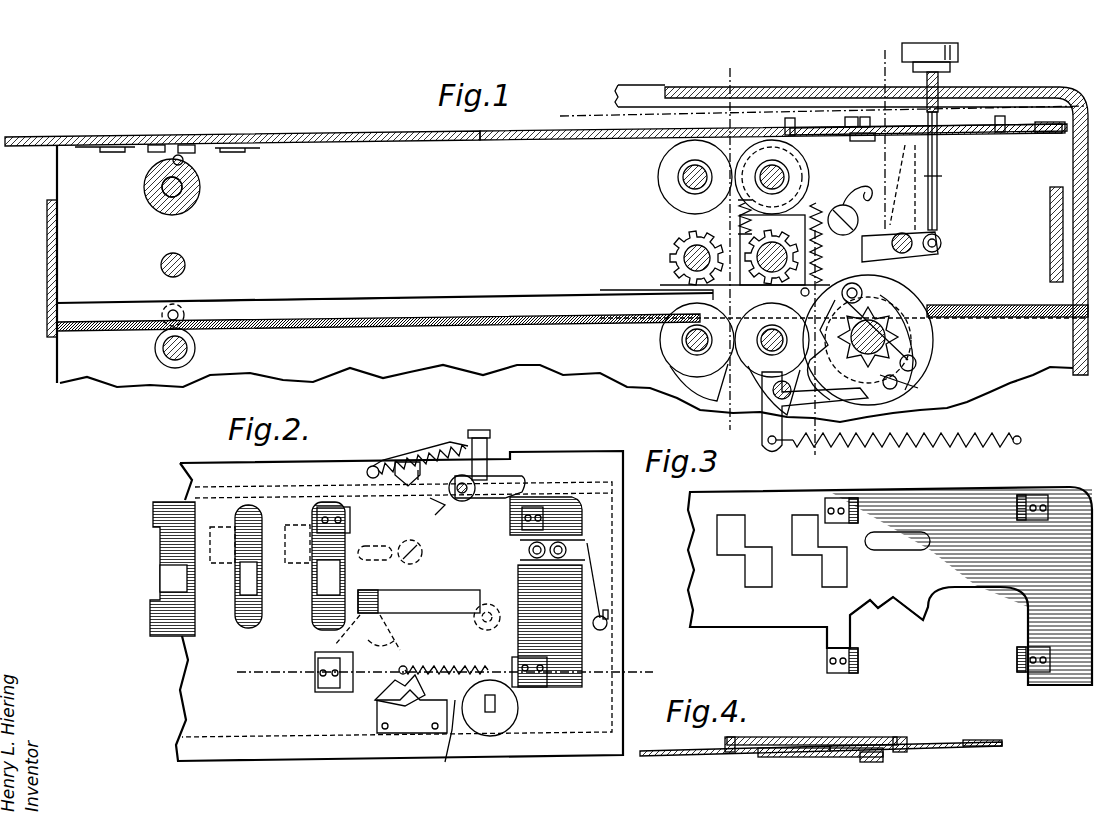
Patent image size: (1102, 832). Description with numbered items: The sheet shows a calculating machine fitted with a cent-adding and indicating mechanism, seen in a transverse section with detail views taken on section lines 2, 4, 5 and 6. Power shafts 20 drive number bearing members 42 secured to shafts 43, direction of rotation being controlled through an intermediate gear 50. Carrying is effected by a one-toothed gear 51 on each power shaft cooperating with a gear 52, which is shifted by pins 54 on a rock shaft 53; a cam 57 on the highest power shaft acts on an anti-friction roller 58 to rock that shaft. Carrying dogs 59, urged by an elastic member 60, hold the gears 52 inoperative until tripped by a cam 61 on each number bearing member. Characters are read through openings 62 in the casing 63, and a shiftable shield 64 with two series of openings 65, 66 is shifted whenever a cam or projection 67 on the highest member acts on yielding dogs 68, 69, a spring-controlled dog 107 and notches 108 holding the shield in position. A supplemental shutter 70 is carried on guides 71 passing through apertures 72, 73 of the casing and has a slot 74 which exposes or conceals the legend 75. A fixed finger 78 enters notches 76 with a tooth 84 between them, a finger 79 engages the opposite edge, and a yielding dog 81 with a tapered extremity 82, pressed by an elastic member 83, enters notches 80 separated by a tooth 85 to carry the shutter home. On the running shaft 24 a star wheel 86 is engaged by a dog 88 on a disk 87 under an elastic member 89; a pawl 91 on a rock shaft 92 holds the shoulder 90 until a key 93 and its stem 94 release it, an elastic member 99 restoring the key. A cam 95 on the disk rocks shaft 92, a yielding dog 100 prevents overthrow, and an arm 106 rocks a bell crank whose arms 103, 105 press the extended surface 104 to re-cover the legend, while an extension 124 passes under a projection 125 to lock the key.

In FIG. 1, the section line 2— 2 is at (1090, 107).
In FIG. 2, the section line 4— 4 is at (644, 666).
In FIG. 1, the section line 5— 5 is at (825, 450).
In FIG. 1, the section line 6— 6 is at (740, 425).
In FIG. 1, the power shaft 20 is at (734, 340).
In FIG. 1, the running shaft 24 is at (905, 380).
In FIG. 1, the number bearing member 42 is at (148, 195).
In FIG. 1, the shaft 43 is at (180, 188).
In FIG. 1, the intermediate gear 50 is at (797, 299).
In FIG. 1, the one-toothed gear 51 is at (715, 390).
In FIG. 1, the gear 52 is at (672, 260).
In FIG. 1, the rock shaft 53 is at (445, 298).
In FIG. 1, the pin 54 is at (665, 291).
In FIG. 1, the cam 57 is at (195, 345).
In FIG. 1, the anti-friction roller 58 is at (178, 308).
In FIG. 1, the carrying dog 59 is at (738, 214).
In FIG. 1, the elastic member 60 is at (767, 262).
In FIG. 1, the cam 61 is at (843, 205).
In FIG. 2, the opening 62 is at (246, 505).
In FIG. 1, the casing 63 is at (530, 131).
In FIG. 2, the casing 63 is at (185, 710).
In FIG. 4, the casing 63 is at (990, 748).
In FIG. 1, the shiftable shield or indicator 64 is at (382, 141).
In FIG. 2, the shiftable shield or indicator 64 is at (178, 620).
In FIG. 3, the shiftable shield or indicator 64 is at (728, 622).
In FIG. 4, the shiftable shield or indicator 64 is at (662, 756).
In FIG. 2, the series of openings 65 is at (153, 546).
In FIG. 3, the series of openings 65 is at (790, 530).
In FIG. 2, the series of openings 66 is at (160, 582).
In FIG. 3, the series of openings 66 is at (826, 575).
In FIG. 1, the cam or projection 67 is at (185, 162).
In FIG. 1, the yielding dog 68 is at (160, 148).
In FIG. 1, the yielding dog 69 is at (188, 150).
In FIG. 1, the supplemental shield or shutter 70 is at (898, 127).
In FIG. 2, the supplemental shield or shutter 70 is at (495, 510).
In FIG. 4, the supplemental shield or shutter 70 is at (822, 737).
In FIG. 1, the guide 71 is at (790, 118).
In FIG. 2, the guide 71 is at (316, 515).
In FIG. 3, the guide 71 is at (850, 498).
In FIG. 4, the guide 71 is at (735, 732).
In FIG. 2, the aperture 72 is at (624, 640).
In FIG. 4, the aperture 72 is at (975, 740).
In FIG. 2, the aperture 73 is at (312, 612).
In FIG. 2, the slot or opening 74 is at (419, 593).
In FIG. 2, the legend or notice 75 is at (422, 553).
In FIG. 1, the notch 76 is at (850, 117).
In FIG. 2, the notch 76 is at (378, 700).
In FIG. 1, the fixed finger or projection 78 is at (865, 117).
In FIG. 2, the fixed finger or projection 78 is at (395, 733).
In FIG. 2, the fixed projection or finger 79 is at (378, 468).
In FIG. 2, the notch 80 is at (548, 553).
In FIG. 1, the yielding dog 81 is at (1035, 95).
In FIG. 2, the yielding dog 81 is at (580, 520).
In FIG. 2, the tapered extremity 82 is at (528, 550).
In FIG. 1, the elastic member 83 is at (1053, 130).
In FIG. 2, the elastic member 83 is at (592, 575).
In FIG. 2, the tooth 84 is at (399, 670).
In FIG. 2, the tooth 85 is at (550, 626).
In FIG. 1, the star or toothed wheel 86 is at (898, 337).
In FIG. 1, the disk 87 is at (925, 312).
In FIG. 1, the dog 88 is at (862, 290).
In FIG. 1, the elastic member 89 is at (915, 362).
In FIG. 1, the shoulder 90 is at (900, 258).
In FIG. 1, the dog or pawl 91 is at (912, 240).
In FIG. 1, the rock shaft 92 is at (941, 243).
In FIG. 1, the key 93 is at (960, 52).
In FIG. 2, the key 93 is at (485, 720).
In FIG. 1, the stem 94 is at (938, 170).
In FIG. 1, the cam 95 is at (815, 412).
In FIG. 1, the elastic member 99 is at (940, 95).
In FIG. 1, the yielding dog 100 is at (790, 444).
In FIG. 2, the arm 103 is at (490, 462).
In FIG. 2, the extended surface 104 is at (418, 462).
In FIG. 2, the arm 105 is at (484, 430).
In FIG. 1, the arm 106 is at (942, 178).
In FIG. 1, the spring-controlled dog 107 is at (850, 139).
In FIG. 2, the spring-controlled dog 107 is at (438, 502).
In FIG. 4, the spring-controlled dog 107 is at (812, 758).
In FIG. 2, the notch 108 is at (371, 632).
In FIG. 3, the notch 108 is at (880, 612).
In FIG. 2, the extension 124 is at (436, 744).
In FIG. 2, the projection 125 is at (505, 700).